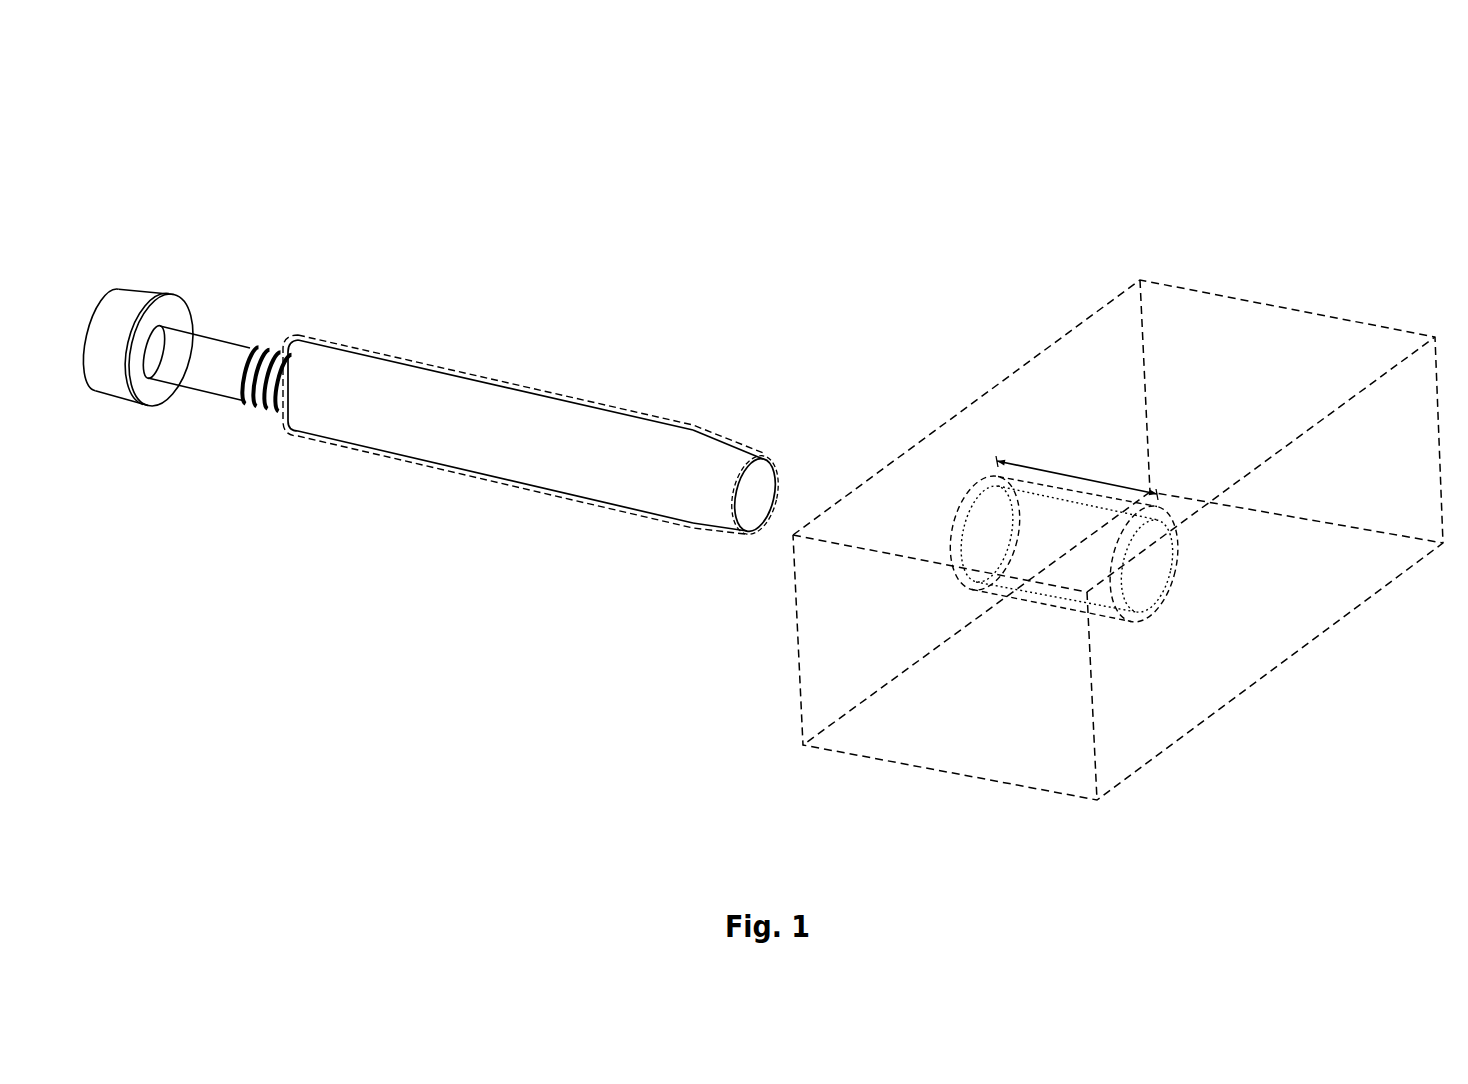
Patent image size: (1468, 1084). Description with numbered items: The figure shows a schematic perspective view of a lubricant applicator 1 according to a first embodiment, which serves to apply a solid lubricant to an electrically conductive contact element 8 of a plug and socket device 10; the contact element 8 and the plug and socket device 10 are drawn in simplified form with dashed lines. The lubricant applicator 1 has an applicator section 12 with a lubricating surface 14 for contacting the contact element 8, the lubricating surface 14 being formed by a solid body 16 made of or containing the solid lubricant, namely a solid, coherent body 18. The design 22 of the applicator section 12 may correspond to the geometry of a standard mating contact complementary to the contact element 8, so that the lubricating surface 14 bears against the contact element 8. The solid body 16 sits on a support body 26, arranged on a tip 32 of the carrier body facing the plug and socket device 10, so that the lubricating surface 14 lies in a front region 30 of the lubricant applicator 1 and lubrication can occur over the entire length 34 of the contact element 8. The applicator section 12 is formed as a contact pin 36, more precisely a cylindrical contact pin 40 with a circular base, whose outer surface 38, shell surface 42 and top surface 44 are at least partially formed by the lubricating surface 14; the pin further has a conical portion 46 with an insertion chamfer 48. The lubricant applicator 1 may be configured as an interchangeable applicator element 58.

The lubricant applicator 1 is at (763, 423).
The interchangeable applicator element 58 is at (303, 88).
The contact element 8 is at (1058, 487).
The plug and socket device 10 is at (1280, 325).
The applicator section 12 is at (556, 476).
The front region 30 is at (803, 393).
The lubricating surface 14 is at (524, 473).
The outer surface 38 is at (524, 473).
The shell surface 42 is at (612, 480).
The solid body 16 is at (524, 458).
The solid, coherent body 18 is at (508, 456).
The design 22 is at (423, 465).
The support body 26 is at (205, 370).
The tip 32 is at (280, 407).
The length 34 is at (1075, 477).
The contact pin 36 is at (747, 546).
The cylindrical contact pin 40 is at (683, 610).
The top surface 44 is at (762, 487).
The conical portion 46 is at (772, 452).
The insertion chamfer 48 is at (730, 532).